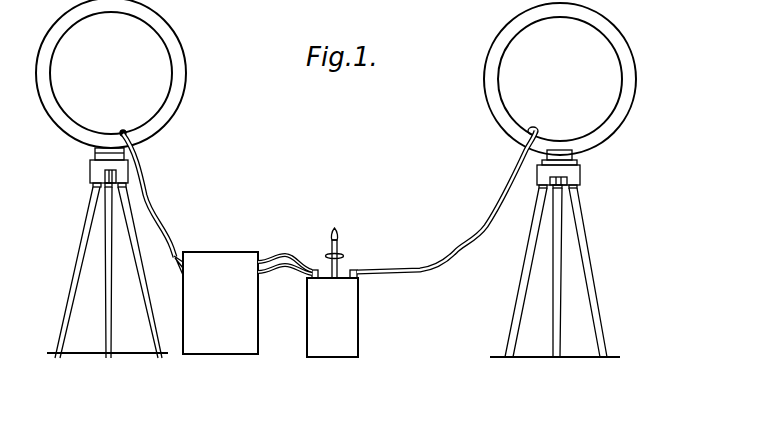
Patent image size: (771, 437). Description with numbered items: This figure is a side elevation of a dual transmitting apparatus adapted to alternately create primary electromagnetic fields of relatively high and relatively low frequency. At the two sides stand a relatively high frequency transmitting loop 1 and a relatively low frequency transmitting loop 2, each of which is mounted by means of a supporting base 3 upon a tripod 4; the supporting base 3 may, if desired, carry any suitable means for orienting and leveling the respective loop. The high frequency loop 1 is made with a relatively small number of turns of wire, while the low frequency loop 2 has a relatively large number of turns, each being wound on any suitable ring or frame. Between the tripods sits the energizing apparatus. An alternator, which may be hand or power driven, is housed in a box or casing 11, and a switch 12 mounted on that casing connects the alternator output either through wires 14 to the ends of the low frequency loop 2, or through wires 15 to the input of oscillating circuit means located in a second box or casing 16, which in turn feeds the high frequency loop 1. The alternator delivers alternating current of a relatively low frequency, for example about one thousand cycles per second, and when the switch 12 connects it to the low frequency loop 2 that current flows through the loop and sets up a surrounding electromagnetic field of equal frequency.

The high frequency transmitting loop 1 is at (177, 57).
The low frequency transmitting loop 2 is at (617, 60).
The supporting base 3 is at (98, 167).
The tripod 4 is at (112, 227).
The box or casing 11 is at (345, 322).
The switch 12 is at (338, 252).
The wires 14 is at (369, 271).
The wires 15 is at (308, 268).
The box or casing 16 is at (230, 343).